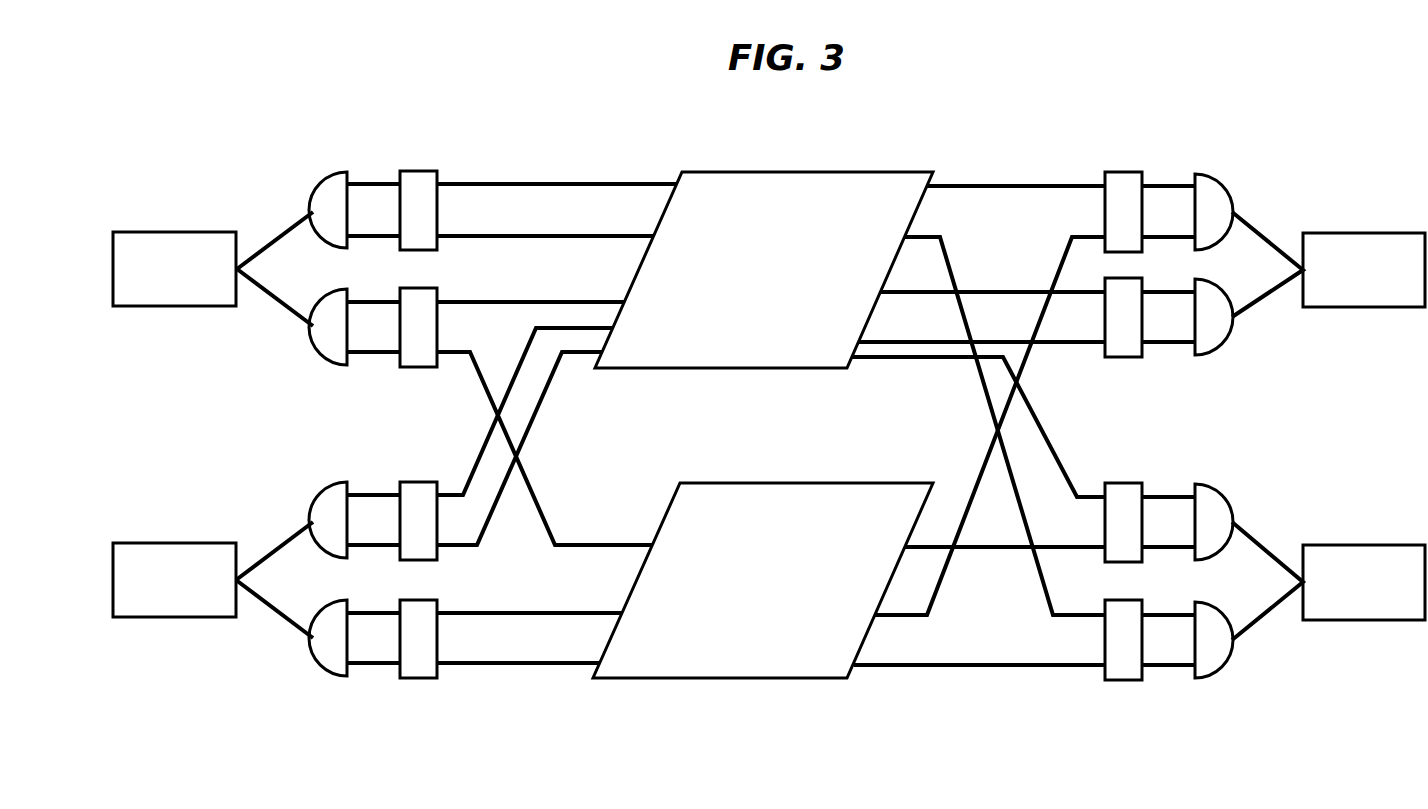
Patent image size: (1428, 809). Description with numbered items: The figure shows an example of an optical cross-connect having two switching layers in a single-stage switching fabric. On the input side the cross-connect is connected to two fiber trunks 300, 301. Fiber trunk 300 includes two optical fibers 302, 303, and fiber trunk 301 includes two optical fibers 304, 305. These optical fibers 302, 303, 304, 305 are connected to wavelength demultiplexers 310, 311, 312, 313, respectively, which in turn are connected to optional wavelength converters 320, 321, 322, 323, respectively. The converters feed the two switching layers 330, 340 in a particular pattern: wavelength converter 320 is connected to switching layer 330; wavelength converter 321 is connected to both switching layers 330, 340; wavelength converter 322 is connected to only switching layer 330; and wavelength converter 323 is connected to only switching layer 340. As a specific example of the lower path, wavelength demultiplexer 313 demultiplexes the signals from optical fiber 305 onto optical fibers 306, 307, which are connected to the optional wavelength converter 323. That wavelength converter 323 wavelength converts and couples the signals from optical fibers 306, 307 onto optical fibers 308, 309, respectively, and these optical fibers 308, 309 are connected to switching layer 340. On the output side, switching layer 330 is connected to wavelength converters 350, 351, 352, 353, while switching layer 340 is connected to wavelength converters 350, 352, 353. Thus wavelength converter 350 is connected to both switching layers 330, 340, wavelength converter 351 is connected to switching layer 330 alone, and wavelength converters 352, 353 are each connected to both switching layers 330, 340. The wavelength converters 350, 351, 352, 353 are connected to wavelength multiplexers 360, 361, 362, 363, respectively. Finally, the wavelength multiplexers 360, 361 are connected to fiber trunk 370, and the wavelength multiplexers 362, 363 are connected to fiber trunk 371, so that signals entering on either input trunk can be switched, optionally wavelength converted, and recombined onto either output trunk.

The fiber trunk 300 is at (136, 232).
The fiber trunk 301 is at (135, 543).
The optical fiber 302 is at (268, 243).
The optical fiber 303 is at (271, 297).
The optical fiber 304 is at (271, 551).
The optical fiber 305 is at (270, 607).
The optical fiber 306 is at (365, 612).
The optical fiber 307 is at (370, 664).
The optical fiber 308 is at (495, 612).
The optical fiber 309 is at (490, 664).
The wavelength demultiplexer 310 is at (315, 183).
The wavelength demultiplexer 311 is at (313, 352).
The wavelength demultiplexer 312 is at (313, 482).
The wavelength demultiplexer 313 is at (316, 662).
The wavelength converter 320 is at (417, 170).
The wavelength converter 321 is at (420, 368).
The wavelength converter 322 is at (410, 482).
The wavelength converter 323 is at (420, 680).
The switching layer 330 is at (721, 170).
The switching layer 340 is at (663, 511).
The wavelength converter 350 is at (1118, 172).
The wavelength converter 351 is at (1116, 358).
The wavelength converter 352 is at (1118, 483).
The wavelength converter 353 is at (1118, 681).
The wavelength multiplexer 360 is at (1211, 173).
The wavelength multiplexer 361 is at (1220, 349).
The wavelength multiplexer 362 is at (1219, 492).
The wavelength multiplexer 363 is at (1215, 675).
The fiber trunk 370 is at (1373, 233).
The fiber trunk 371 is at (1363, 545).